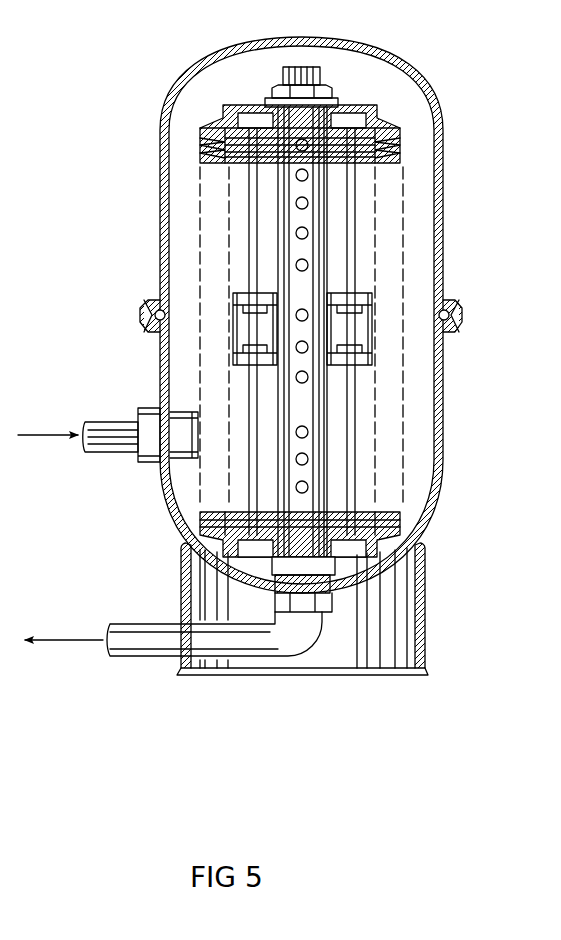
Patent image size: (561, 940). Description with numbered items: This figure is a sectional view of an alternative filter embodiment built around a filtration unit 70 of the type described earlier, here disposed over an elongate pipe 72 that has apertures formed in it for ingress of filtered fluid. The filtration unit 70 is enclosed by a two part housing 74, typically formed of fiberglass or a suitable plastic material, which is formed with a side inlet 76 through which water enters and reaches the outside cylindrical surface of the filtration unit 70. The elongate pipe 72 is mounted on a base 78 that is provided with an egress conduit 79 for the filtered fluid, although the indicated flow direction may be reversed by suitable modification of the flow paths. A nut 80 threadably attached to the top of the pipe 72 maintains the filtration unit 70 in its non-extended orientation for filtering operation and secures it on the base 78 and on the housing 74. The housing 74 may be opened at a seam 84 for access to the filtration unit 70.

The filtration unit 70 is at (412, 177).
The elongate pipe 72 is at (327, 225).
The two part housing 74 is at (443, 267).
The side inlet 76 is at (107, 424).
The base 78 is at (423, 600).
The egress conduit 79 is at (145, 625).
The nut 80 is at (330, 90).
The seam 84 is at (452, 313).